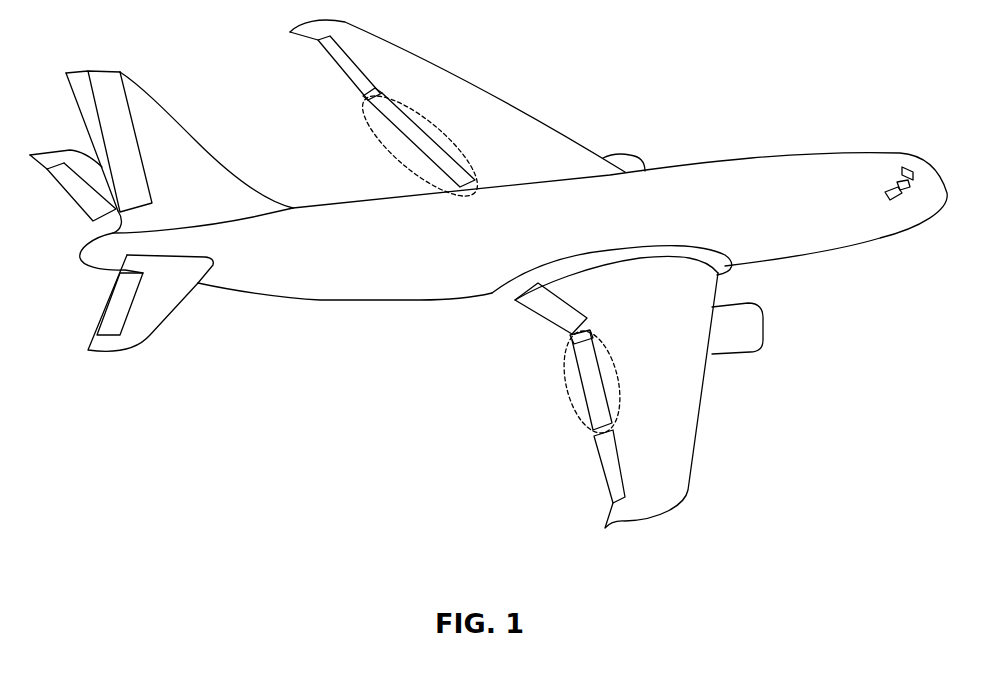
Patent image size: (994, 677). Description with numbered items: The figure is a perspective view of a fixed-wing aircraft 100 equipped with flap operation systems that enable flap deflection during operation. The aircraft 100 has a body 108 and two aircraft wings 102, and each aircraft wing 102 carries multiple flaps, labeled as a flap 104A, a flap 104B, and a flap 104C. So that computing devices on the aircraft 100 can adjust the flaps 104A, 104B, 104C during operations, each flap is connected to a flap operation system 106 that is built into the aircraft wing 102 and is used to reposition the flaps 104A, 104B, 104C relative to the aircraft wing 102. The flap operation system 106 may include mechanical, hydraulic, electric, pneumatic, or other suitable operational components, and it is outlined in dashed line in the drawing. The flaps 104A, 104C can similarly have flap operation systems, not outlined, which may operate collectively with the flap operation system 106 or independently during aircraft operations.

The aircraft 100 is at (707, 66).
The aircraft wing 102 is at (393, 42).
The flap 104A is at (340, 68).
The flap 104B is at (415, 143).
The flap 104C is at (543, 300).
The flap operation system 106 is at (370, 123).
The body 108 is at (755, 180).